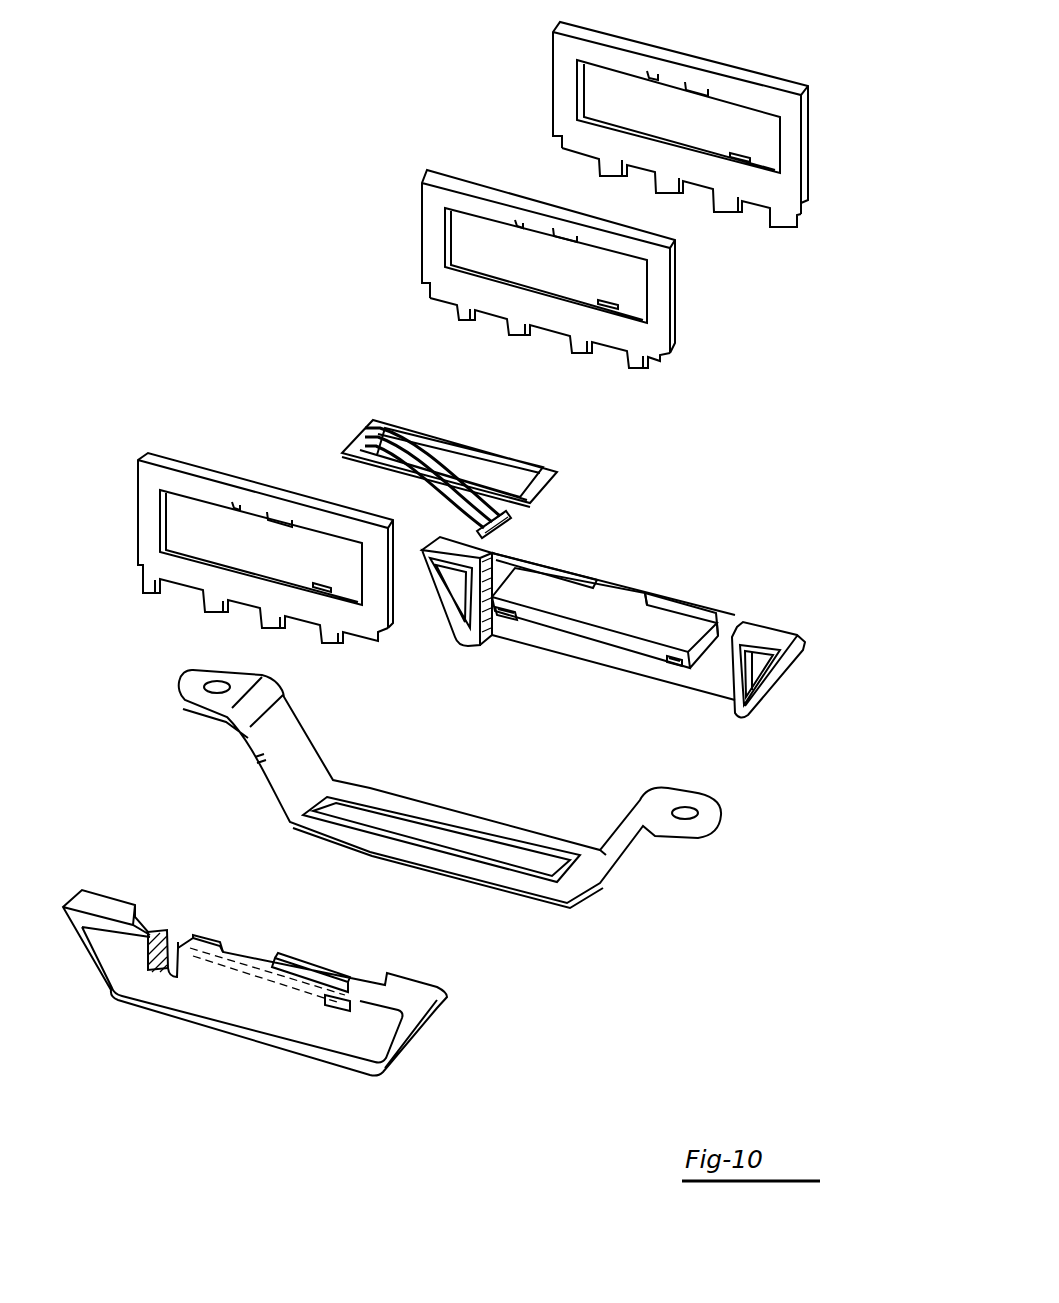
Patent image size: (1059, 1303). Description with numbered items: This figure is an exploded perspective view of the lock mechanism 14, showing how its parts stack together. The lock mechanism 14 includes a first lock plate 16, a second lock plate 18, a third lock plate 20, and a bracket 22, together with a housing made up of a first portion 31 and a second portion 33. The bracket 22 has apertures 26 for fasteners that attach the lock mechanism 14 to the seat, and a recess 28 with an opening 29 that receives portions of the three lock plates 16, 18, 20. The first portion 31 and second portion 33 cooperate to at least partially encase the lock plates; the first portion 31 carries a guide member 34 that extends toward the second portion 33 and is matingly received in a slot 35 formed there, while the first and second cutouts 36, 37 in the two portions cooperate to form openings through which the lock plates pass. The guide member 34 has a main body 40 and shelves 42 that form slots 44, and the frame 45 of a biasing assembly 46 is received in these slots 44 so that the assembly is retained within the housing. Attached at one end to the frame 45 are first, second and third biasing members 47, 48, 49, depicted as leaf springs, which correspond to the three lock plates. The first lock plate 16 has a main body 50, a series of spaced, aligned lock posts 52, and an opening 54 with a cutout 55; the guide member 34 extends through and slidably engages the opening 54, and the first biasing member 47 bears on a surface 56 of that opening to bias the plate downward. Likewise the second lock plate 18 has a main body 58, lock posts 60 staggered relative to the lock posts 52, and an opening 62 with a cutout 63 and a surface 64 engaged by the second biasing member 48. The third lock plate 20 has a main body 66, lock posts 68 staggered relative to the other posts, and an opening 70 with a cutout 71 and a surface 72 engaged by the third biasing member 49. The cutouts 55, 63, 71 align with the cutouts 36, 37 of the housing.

The lock mechanism 14 is at (222, 176).
The first lock plate 16 is at (637, 139).
The second lock plate 18 is at (505, 290).
The third lock plate 20 is at (229, 560).
The bracket 22 is at (492, 765).
The apertures 26 is at (215, 684).
The recess 28 is at (333, 793).
The opening 29 is at (428, 833).
The first portion 31 is at (649, 625).
The second portion 33 is at (288, 967).
The guide member 34 is at (612, 623).
The slot 35 is at (178, 945).
The first cutout 36 is at (641, 586).
The second cutout 37 is at (221, 944).
The main body 40 is at (665, 620).
The shelves 42 is at (507, 621).
The slots 44 is at (670, 656).
The frame 45 is at (382, 421).
The biasing assembly 46 is at (441, 478).
The first biasing member 47 is at (517, 512).
The second biasing member 48 is at (525, 521).
The third biasing member 49 is at (499, 533).
The main body 50 is at (563, 94).
The lock posts 52 is at (781, 218).
The opening 54 is at (645, 77).
The cutout 55 is at (685, 84).
The surface 56 is at (733, 157).
The main body 58 is at (430, 241).
The lock posts 60 is at (507, 332).
The opening 62 is at (506, 225).
The cutout 63 is at (553, 229).
The surface 64 is at (599, 306).
The main body 66 is at (143, 512).
The lock posts 68 is at (201, 605).
The opening 70 is at (232, 506).
The cutout 71 is at (270, 514).
The surface 72 is at (318, 588).